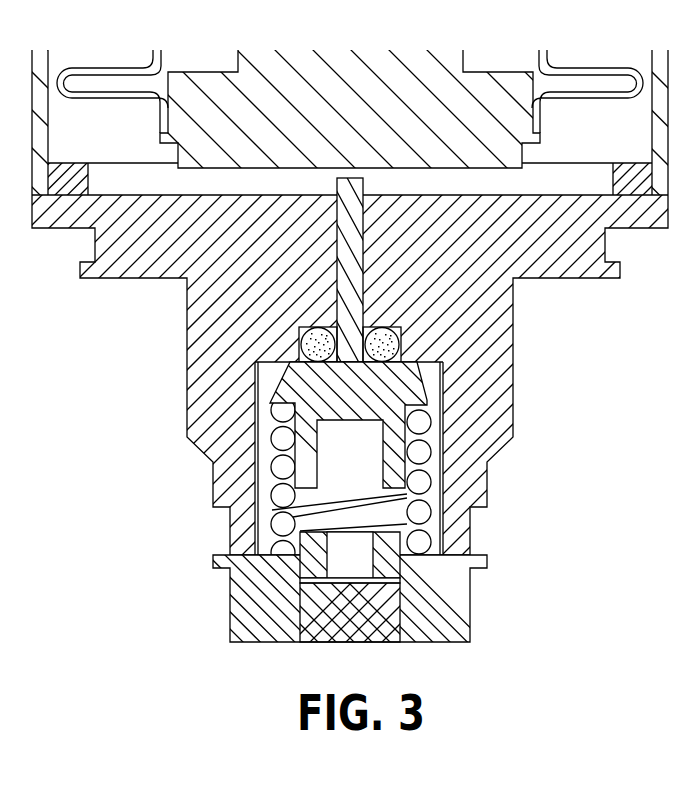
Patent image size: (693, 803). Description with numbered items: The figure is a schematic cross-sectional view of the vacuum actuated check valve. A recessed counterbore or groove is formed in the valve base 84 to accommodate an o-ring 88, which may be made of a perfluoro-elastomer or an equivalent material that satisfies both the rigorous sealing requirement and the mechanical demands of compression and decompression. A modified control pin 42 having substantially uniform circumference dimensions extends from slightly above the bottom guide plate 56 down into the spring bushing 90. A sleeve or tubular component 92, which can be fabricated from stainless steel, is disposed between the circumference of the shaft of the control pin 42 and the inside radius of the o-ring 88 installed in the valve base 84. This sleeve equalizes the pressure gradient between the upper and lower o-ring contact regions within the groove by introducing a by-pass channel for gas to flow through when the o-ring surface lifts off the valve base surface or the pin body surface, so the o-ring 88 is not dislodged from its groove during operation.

The control pin 42 is at (352, 252).
The bottom guide plate 56 is at (575, 197).
The valve base 84 is at (507, 307).
The o-ring 88 is at (398, 345).
The spring bushing 90 is at (427, 392).
The sleeve or tubular component 92 is at (365, 353).